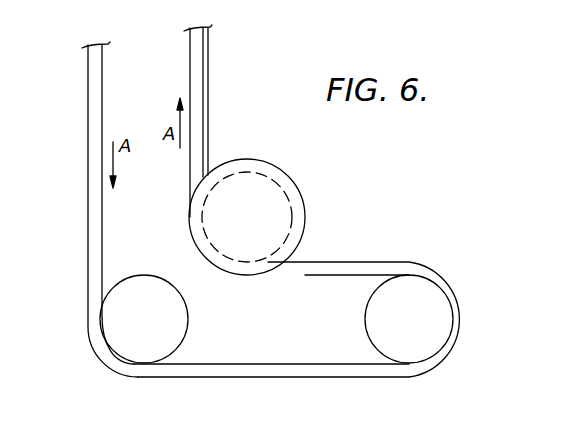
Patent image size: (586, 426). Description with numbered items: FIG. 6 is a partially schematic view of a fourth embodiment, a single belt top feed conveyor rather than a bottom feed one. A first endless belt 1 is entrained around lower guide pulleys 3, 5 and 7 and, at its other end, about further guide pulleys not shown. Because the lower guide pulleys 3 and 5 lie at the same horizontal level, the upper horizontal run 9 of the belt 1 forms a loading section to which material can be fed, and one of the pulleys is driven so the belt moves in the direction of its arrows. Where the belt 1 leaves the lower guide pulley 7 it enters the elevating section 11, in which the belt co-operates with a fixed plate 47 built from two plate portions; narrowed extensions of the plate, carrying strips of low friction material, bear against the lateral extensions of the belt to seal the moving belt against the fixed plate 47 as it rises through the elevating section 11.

The first endless belt 1 is at (89, 163).
The lower guide pulley 3 is at (421, 354).
The lower guide pulley 5 is at (150, 314).
The lower guide pulley 7 is at (272, 198).
The upper horizontal run 9 is at (350, 256).
The elevating section 11 is at (222, 53).
The fixed plate 47 is at (208, 104).